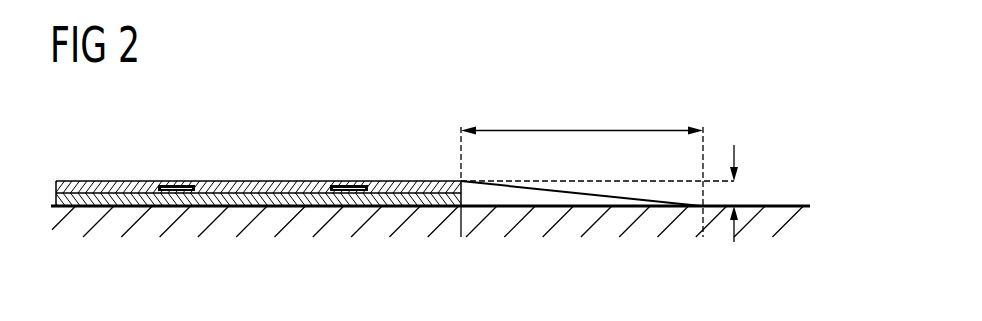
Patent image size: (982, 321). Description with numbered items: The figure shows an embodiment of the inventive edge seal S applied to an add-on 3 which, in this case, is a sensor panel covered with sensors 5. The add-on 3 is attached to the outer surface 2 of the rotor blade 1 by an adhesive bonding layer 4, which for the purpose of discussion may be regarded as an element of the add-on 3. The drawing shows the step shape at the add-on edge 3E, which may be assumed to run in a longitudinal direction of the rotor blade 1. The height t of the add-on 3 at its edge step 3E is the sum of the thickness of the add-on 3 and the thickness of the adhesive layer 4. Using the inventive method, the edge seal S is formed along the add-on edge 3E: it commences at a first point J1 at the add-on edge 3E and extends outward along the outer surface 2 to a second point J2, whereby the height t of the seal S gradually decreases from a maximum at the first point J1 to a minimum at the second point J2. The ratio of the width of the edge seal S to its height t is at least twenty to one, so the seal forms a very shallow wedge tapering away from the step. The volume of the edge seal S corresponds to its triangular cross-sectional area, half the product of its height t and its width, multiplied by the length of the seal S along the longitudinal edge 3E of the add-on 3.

The rotor blade 1 is at (443, 224).
The outer surface 2 is at (793, 205).
The add-on 3 is at (262, 186).
The add-on edge 3E is at (460, 180).
The adhesive bonding layer 4 is at (122, 200).
The sensors 5 is at (172, 183).
The edge seal S is at (541, 199).
The first point J1 is at (460, 203).
The second point J2 is at (707, 203).
The height t is at (736, 193).